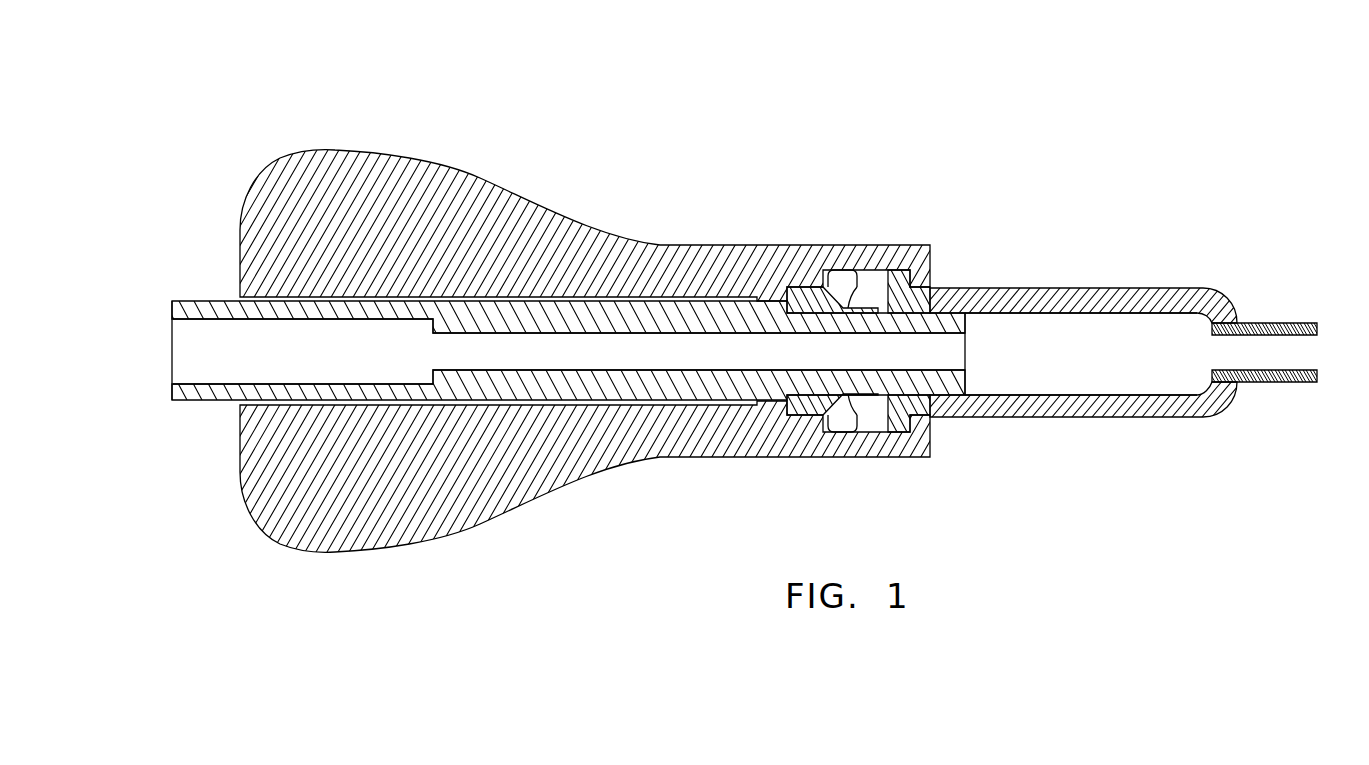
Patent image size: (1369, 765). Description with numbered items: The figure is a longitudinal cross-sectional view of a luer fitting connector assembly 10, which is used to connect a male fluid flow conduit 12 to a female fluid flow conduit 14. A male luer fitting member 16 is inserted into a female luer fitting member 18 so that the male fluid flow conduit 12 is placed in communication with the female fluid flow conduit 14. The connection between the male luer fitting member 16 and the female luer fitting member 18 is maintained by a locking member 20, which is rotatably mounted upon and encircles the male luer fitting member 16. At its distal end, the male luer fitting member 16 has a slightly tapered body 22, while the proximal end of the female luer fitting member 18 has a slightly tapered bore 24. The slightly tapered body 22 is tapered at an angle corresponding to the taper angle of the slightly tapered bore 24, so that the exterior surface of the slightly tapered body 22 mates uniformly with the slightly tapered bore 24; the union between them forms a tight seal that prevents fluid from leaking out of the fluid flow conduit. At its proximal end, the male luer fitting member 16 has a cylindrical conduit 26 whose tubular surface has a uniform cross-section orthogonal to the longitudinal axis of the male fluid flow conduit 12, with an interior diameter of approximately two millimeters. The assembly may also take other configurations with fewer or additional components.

The luer fitting connector assembly 10 is at (918, 82).
The male fluid flow conduit 12 is at (195, 360).
The female fluid flow conduit 14 is at (1310, 347).
The male luer fitting member 16 is at (190, 299).
The female luer fitting member 18 is at (1058, 279).
The locking member 20 is at (345, 136).
The slightly tapered body 22 is at (860, 404).
The slightly tapered bore 24 is at (993, 315).
The cylindrical conduit 26 is at (918, 342).